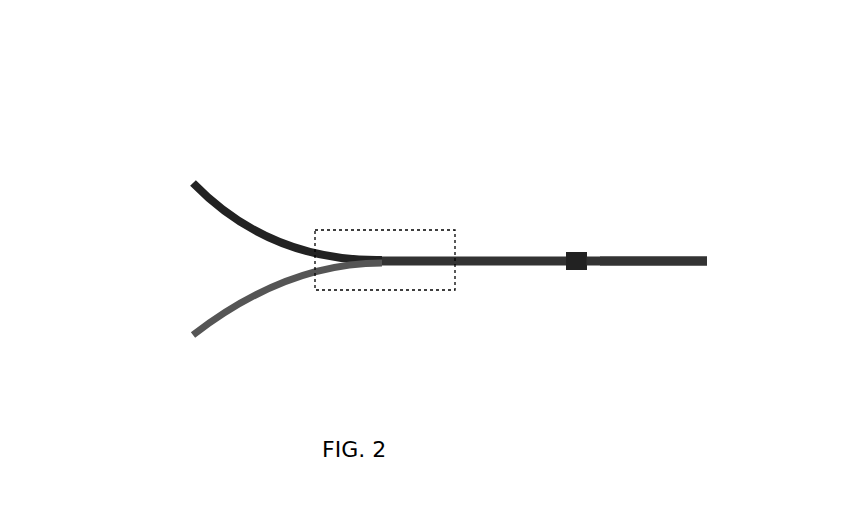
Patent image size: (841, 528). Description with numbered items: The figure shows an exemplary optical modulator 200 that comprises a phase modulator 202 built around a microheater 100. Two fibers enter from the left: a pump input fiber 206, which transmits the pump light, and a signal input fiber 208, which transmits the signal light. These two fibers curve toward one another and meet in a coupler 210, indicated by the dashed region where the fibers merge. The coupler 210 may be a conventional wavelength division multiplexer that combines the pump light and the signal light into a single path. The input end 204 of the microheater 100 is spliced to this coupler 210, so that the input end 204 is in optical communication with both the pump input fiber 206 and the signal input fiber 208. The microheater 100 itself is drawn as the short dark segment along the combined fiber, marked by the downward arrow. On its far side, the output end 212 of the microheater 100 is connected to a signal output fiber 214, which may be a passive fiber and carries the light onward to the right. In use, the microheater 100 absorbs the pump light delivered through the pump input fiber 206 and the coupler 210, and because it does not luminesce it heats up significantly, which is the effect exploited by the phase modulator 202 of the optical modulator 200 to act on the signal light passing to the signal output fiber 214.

The microheater 100 is at (575, 238).
The optical modulator 200 is at (384, 228).
The phase modulator 202 is at (384, 228).
The input end 204 is at (570, 259).
The pump input fiber 206 is at (197, 197).
The signal input fiber 208 is at (197, 330).
The coupler 210 is at (385, 273).
The output end 212 is at (586, 260).
The signal output fiber 214 is at (635, 267).